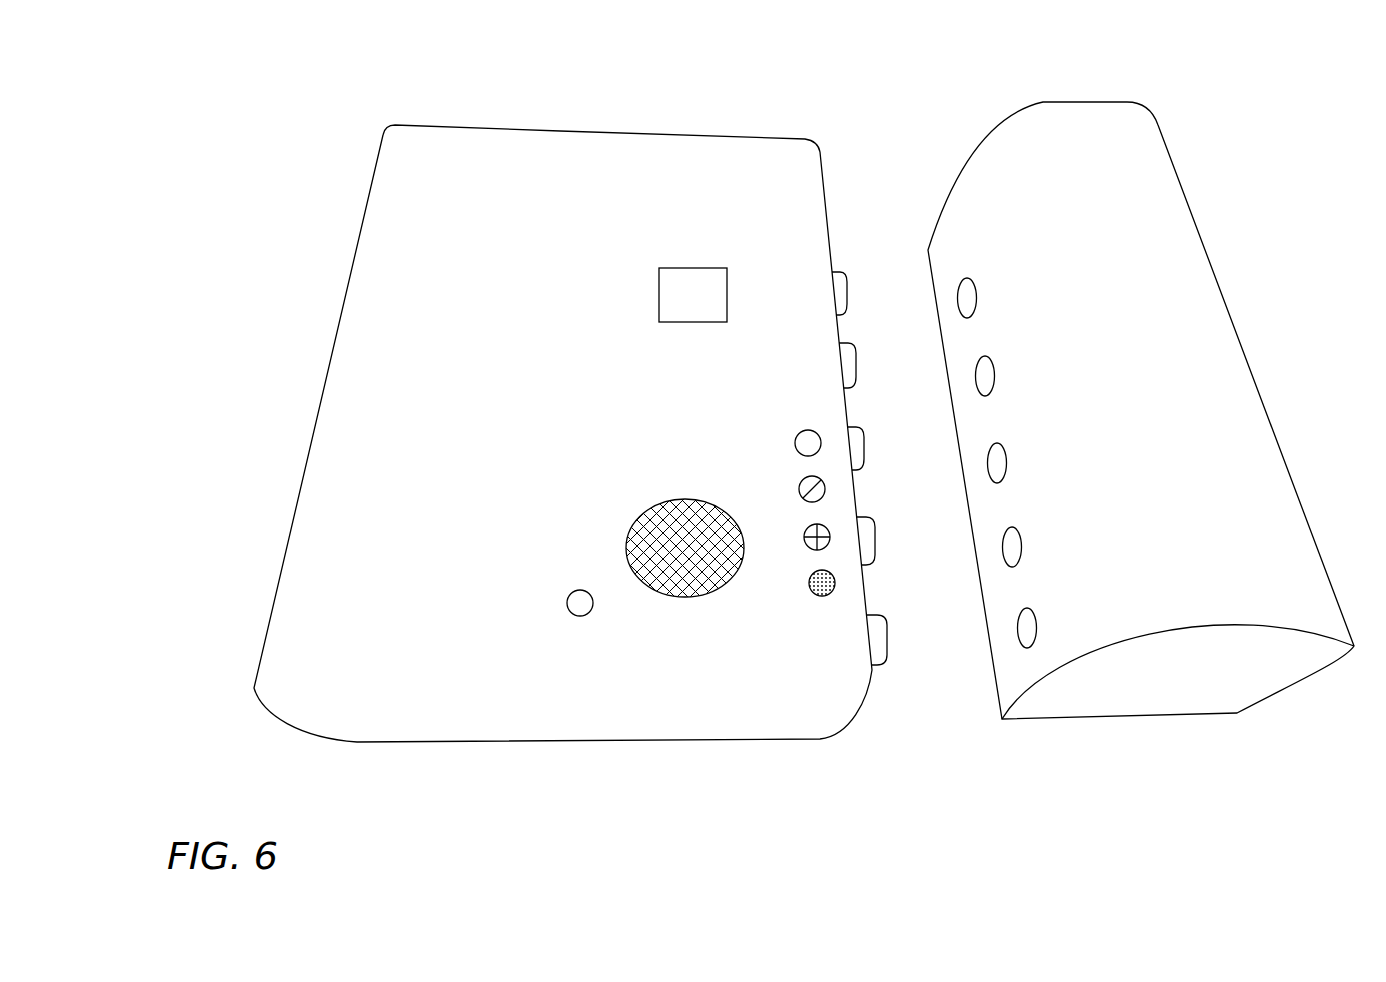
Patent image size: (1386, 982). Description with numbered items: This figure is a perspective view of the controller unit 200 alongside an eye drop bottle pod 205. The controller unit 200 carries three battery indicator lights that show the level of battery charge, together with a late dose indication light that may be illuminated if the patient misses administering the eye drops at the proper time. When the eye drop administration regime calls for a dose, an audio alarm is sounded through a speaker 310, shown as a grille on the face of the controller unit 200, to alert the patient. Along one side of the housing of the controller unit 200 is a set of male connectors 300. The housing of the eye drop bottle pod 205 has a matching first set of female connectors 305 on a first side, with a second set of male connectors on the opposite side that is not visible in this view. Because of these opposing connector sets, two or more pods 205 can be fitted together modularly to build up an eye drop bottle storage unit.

The controller unit 200 is at (648, 134).
The eye drop bottle pod 205 is at (1102, 101).
The male connectors 300 is at (853, 345).
The female connectors 305 is at (1003, 452).
The speaker 310 is at (685, 597).